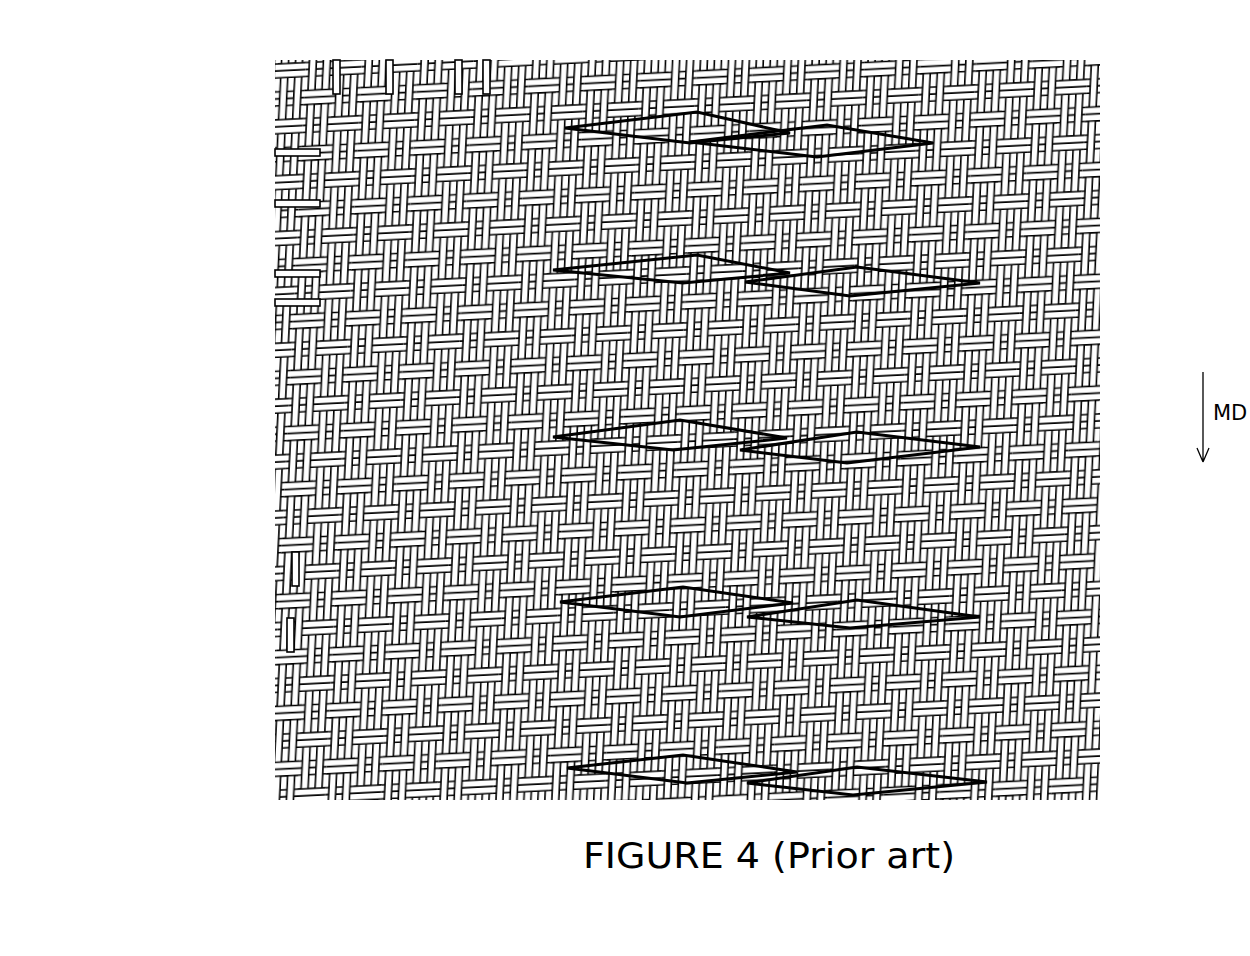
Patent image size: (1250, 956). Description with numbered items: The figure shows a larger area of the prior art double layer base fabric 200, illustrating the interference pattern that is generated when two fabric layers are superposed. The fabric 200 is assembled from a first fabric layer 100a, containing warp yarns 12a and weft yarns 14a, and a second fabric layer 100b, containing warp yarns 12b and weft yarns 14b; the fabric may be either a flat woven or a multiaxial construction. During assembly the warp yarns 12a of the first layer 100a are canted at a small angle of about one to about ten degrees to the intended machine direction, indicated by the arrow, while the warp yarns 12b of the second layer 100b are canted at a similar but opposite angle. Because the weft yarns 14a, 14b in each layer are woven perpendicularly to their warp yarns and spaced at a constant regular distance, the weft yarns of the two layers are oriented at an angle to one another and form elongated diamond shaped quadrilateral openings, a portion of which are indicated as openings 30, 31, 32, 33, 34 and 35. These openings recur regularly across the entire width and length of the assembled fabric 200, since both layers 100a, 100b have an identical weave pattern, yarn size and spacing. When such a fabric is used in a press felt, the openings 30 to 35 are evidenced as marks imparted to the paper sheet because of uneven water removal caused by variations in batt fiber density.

The double layer fabric 200 is at (1173, 140).
The warp yarns of first fabric layer 12a is at (388, 75).
The warp yarns of second fabric layer 12b is at (485, 75).
The weft yarns of first fabric layer 14a is at (273, 203).
The weft yarns of second fabric layer 14b is at (283, 302).
The first fabric layer 100a is at (295, 567).
The second fabric layer 100b is at (290, 633).
The elongated diamond shaped quadrilateral opening 30 is at (985, 782).
The elongated diamond shaped quadrilateral opening 31 is at (985, 612).
The elongated diamond shaped quadrilateral opening 32 is at (975, 447).
The elongated diamond shaped quadrilateral opening 33 is at (975, 283).
The elongated diamond shaped quadrilateral opening 34 is at (830, 128).
The elongated diamond shaped quadrilateral opening 35 is at (718, 112).